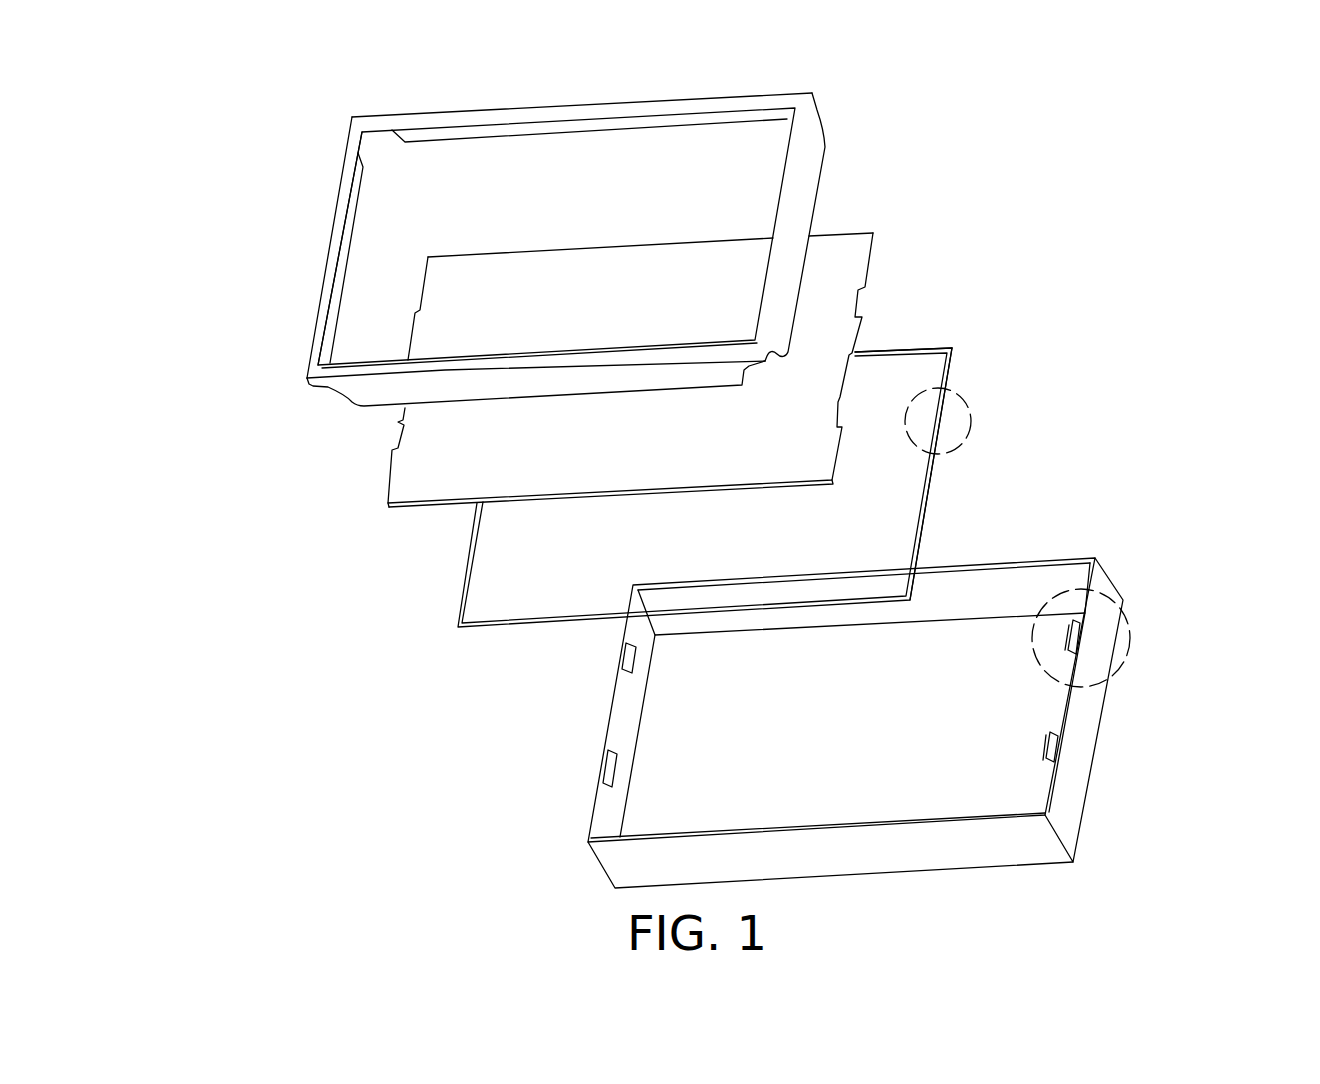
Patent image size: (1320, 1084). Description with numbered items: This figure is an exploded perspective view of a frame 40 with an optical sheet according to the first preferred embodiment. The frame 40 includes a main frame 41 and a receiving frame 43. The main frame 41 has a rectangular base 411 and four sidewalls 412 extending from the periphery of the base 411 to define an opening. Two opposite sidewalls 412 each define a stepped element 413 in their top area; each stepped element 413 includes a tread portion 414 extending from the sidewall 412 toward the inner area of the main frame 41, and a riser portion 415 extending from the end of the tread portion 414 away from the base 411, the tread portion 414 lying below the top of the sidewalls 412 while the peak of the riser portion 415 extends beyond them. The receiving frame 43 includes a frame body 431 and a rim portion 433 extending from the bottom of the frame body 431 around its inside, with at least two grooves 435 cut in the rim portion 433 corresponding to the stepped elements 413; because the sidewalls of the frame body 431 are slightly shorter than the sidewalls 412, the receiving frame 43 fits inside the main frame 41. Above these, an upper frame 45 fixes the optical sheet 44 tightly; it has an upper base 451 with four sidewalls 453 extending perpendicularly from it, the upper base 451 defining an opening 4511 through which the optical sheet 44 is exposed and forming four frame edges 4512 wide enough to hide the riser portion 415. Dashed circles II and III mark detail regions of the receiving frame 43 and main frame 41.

The frame 40 is at (600, 78).
The main frame 41 is at (927, 692).
The base 411 is at (983, 643).
The sidewalls 412 is at (1052, 786).
The stepped element 413 is at (1154, 727).
The tread portion 414 is at (1059, 749).
The riser portion 415 is at (1067, 738).
The receiving frame 43 is at (749, 457).
The frame body 431 is at (955, 352).
The rim portion 433 is at (948, 373).
The grooves 435 is at (923, 528).
The optical sheet 44 is at (853, 252).
The upper frame 45 is at (550, 249).
The upper base 451 is at (267, 247).
The opening 4511 is at (367, 150).
The frame edges 4512 is at (338, 233).
The sidewalls 453 is at (810, 162).
The detail II is at (970, 416).
The detail III is at (1129, 633).